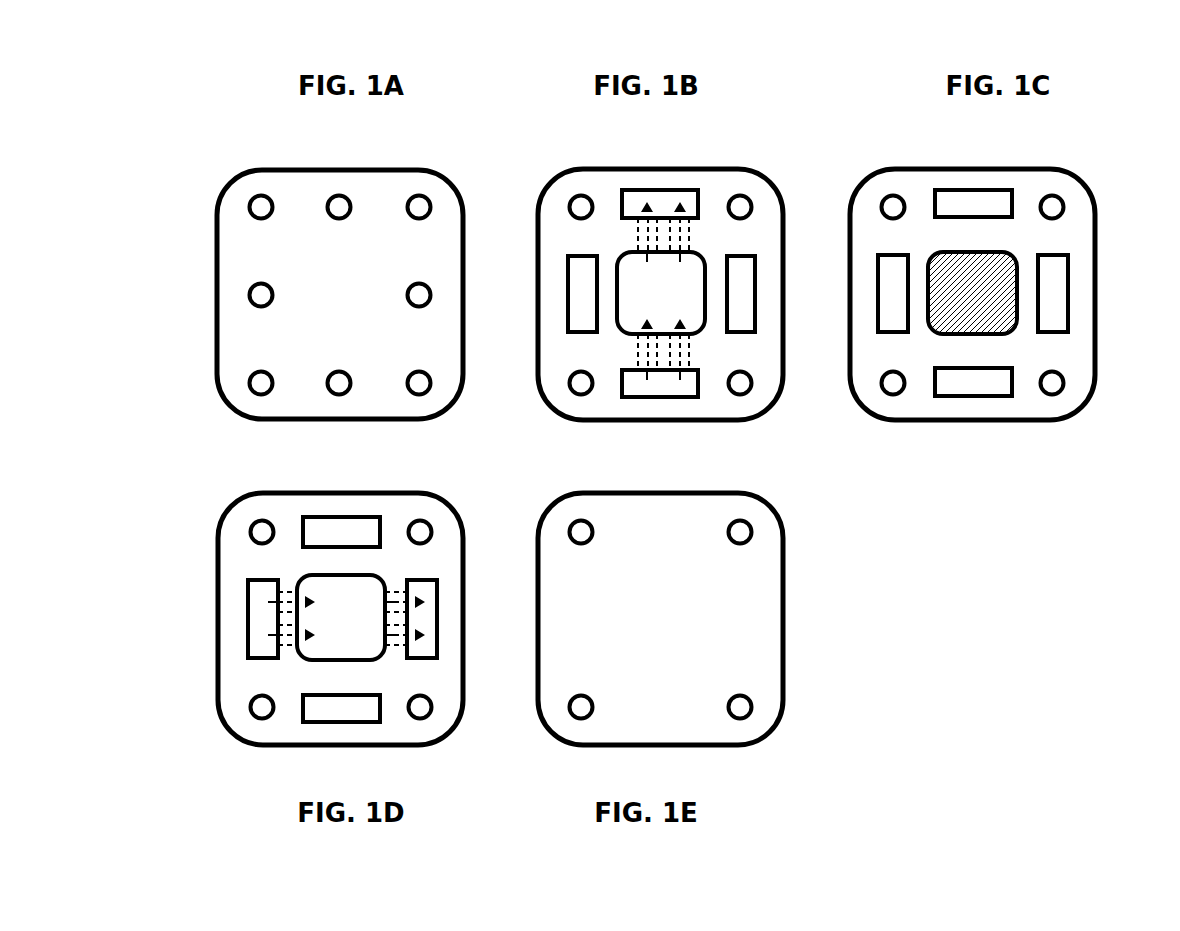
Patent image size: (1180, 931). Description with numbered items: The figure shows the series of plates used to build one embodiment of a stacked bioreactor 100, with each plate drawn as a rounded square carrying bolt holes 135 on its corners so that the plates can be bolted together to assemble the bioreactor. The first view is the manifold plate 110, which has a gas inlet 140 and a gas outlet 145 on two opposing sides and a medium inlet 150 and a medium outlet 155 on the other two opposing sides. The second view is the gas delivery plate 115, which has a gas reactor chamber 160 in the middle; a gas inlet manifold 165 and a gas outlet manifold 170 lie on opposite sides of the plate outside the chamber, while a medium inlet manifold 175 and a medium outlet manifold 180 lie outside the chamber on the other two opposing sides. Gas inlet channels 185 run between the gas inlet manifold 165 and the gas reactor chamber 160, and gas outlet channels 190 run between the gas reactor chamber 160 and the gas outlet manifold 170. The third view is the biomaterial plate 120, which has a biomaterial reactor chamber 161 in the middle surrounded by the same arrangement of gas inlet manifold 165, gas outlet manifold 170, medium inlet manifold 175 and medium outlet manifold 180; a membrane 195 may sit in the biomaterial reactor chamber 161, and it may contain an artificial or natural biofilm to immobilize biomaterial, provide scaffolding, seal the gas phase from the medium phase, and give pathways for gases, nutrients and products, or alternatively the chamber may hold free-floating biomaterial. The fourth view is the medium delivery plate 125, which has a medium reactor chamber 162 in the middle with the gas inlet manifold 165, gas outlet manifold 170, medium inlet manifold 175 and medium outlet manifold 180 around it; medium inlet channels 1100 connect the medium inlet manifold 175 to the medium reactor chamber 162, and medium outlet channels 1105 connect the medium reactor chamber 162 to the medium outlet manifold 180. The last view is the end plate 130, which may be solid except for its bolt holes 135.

In FIG. 1A, the bioreactor 100 is at (183, 195).
In FIG. 1A, the manifold plate 110 is at (230, 336).
In FIG. 1B, the gas delivery plate 115 is at (710, 180).
In FIG. 1C, the biomaterial plate 120 is at (1035, 180).
In FIG. 1D, the medium delivery plate 125 is at (395, 520).
In FIG. 1E, the end plate 130 is at (755, 627).
In FIG. 1A, the bolt holes 135 is at (261, 195).
In FIG. 1B, the bolt holes 135 is at (590, 197).
In FIG. 1C, the bolt holes 135 is at (900, 197).
In FIG. 1D, the bolt holes 135 is at (268, 521).
In FIG. 1E, the bolt holes 135 is at (590, 521).
In FIG. 1A, the gas inlet 140 is at (339, 395).
In FIG. 1A, the gas outlet 145 is at (339, 196).
In FIG. 1A, the medium inlet 150 is at (250, 295).
In FIG. 1A, the medium outlet 155 is at (428, 304).
In FIG. 1B, the gas reactor chamber 160 is at (661, 316).
In FIG. 1C, the biomaterial reactor chamber 161 is at (972, 273).
In FIG. 1D, the medium reactor chamber 162 is at (342, 617).
In FIG. 1B, the gas inlet manifold 165 is at (665, 388).
In FIG. 1C, the gas inlet manifold 165 is at (978, 385).
In FIG. 1D, the gas inlet manifold 165 is at (340, 712).
In FIG. 1B, the gas outlet manifold 170 is at (661, 200).
In FIG. 1C, the gas outlet manifold 170 is at (973, 200).
In FIG. 1D, the gas outlet manifold 170 is at (335, 525).
In FIG. 1B, the medium inlet manifold 175 is at (578, 305).
In FIG. 1C, the medium inlet manifold 175 is at (893, 305).
In FIG. 1D, the medium inlet manifold 175 is at (255, 628).
In FIG. 1B, the medium outlet manifold 180 is at (740, 305).
In FIG. 1C, the medium outlet manifold 180 is at (1053, 305).
In FIG. 1D, the medium outlet manifold 180 is at (425, 615).
In FIG. 1B, the gas inlet channels 185 is at (688, 350).
In FIG. 1B, the gas outlet channels 190 is at (668, 238).
In FIG. 1C, the membrane 195 is at (993, 318).
In FIG. 1D, the medium inlet channels 1100 is at (285, 650).
In FIG. 1D, the medium outlet channels 1105 is at (395, 650).